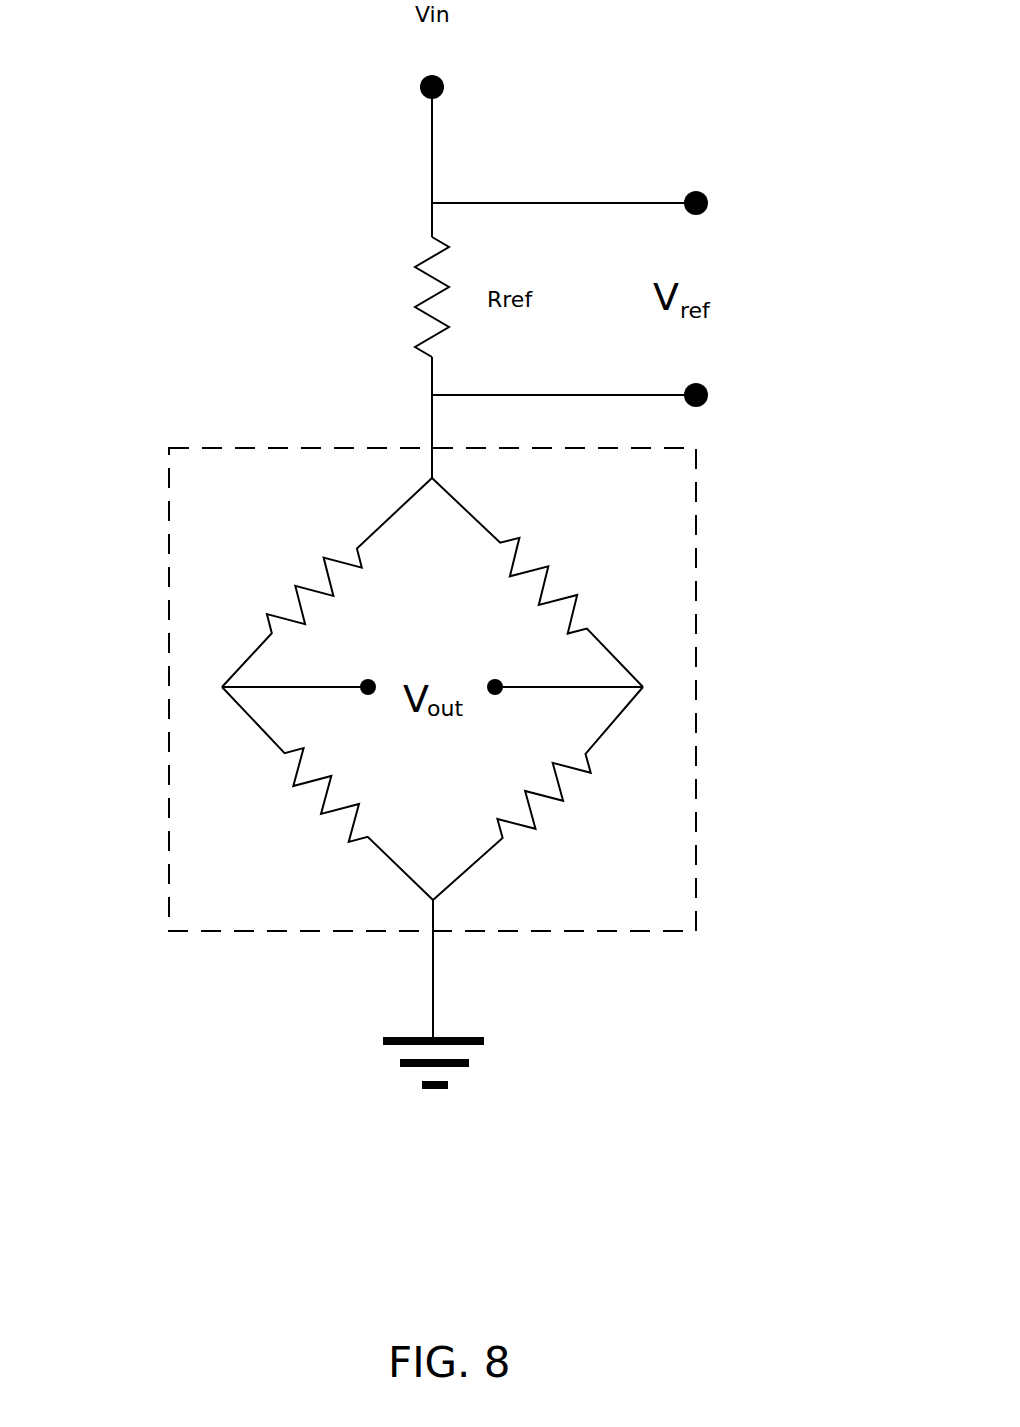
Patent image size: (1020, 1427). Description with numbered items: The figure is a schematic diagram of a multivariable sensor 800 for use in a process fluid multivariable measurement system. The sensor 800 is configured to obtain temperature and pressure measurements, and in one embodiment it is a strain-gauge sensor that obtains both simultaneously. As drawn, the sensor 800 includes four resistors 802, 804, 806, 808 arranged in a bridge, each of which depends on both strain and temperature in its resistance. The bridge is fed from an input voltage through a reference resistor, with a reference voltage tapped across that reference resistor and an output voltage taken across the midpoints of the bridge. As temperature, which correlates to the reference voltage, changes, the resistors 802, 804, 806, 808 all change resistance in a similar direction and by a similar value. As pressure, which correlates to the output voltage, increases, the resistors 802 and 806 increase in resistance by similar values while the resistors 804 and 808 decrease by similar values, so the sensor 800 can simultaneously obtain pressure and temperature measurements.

The sensor 800 is at (152, 360).
The resistor 802 is at (280, 543).
The resistor 804 is at (275, 832).
The resistor 806 is at (597, 833).
The resistor 808 is at (612, 520).